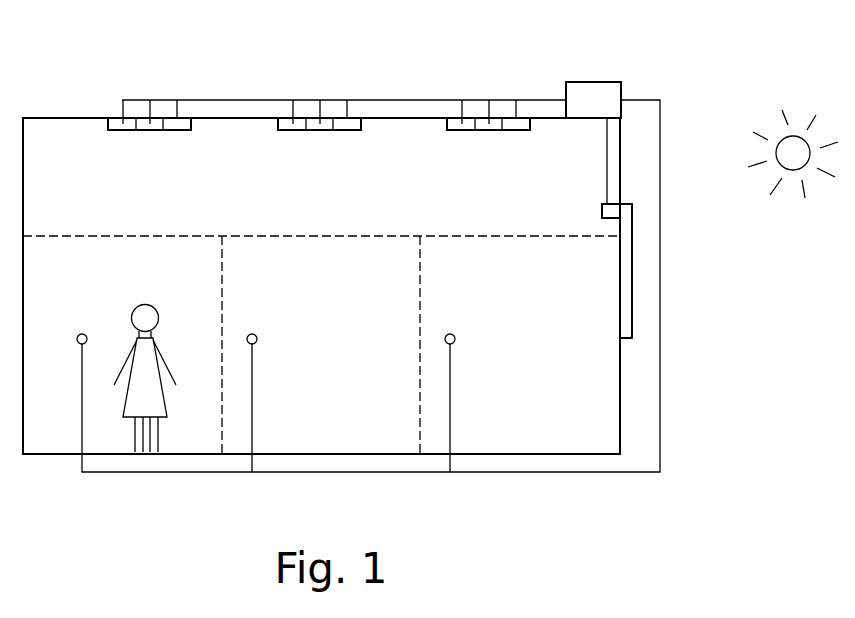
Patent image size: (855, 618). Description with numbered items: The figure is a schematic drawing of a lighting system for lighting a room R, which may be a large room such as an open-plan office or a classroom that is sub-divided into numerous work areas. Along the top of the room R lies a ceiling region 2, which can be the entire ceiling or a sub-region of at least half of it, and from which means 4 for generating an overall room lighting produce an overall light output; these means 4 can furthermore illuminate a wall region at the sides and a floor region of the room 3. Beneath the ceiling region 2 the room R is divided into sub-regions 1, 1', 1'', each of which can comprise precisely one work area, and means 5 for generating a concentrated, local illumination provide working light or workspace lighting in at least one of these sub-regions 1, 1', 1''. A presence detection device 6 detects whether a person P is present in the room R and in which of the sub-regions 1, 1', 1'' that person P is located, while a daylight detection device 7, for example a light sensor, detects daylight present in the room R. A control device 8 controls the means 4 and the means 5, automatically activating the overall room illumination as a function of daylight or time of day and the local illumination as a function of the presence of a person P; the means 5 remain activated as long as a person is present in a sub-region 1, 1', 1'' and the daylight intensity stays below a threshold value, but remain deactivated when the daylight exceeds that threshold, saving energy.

The room R is at (67, 145).
The sub-region 1 is at (321, 377).
The sub-region 1' is at (282, 378).
The sub-region 1'' is at (491, 378).
The ceiling region 2 is at (123, 130).
The floor region of the room 3 is at (624, 293).
The means for generating an overall room lighting 4 is at (183, 122).
The means for generating a concentrated, local illumination 5 is at (155, 127).
The presence detection device 6 is at (76, 339).
The daylight detection device 7 is at (605, 210).
The control device 8 is at (598, 93).
The person P is at (148, 362).